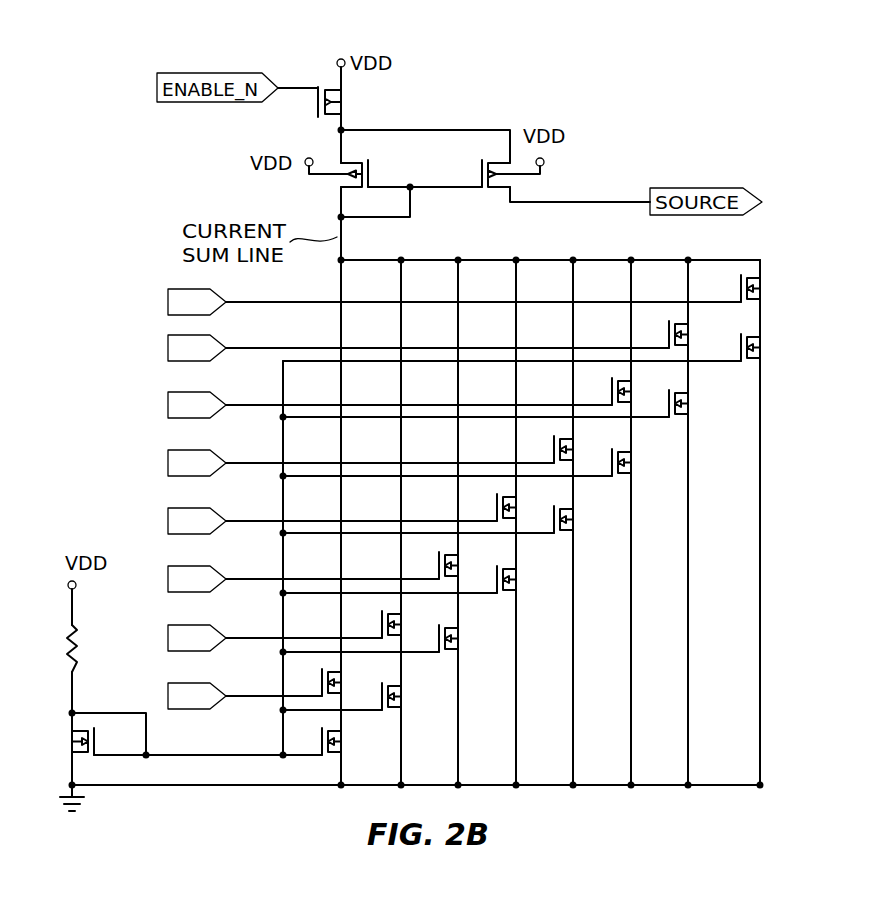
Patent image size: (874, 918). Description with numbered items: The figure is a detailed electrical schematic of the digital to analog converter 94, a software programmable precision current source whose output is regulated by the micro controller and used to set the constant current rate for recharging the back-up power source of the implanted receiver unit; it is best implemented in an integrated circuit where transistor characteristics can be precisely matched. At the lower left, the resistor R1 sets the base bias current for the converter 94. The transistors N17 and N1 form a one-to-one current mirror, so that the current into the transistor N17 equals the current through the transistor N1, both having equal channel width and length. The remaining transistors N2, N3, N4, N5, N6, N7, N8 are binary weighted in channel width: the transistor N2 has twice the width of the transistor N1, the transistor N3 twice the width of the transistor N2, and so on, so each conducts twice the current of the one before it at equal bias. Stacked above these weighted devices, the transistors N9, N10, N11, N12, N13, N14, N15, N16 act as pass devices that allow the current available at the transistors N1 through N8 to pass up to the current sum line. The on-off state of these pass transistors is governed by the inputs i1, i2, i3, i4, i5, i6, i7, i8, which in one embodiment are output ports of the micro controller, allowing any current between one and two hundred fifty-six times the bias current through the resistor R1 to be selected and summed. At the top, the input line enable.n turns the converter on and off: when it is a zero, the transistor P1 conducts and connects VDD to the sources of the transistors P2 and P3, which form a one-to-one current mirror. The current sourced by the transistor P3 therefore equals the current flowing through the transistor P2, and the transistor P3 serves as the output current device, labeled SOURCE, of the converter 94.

The digital to analog converter 94 is at (763, 528).
The transistor P1 is at (311, 103).
The transistor P2 is at (368, 173).
The transistor P3 is at (480, 173).
The transistor N1 is at (356, 752).
The transistor N2 is at (416, 707).
The transistor N3 is at (473, 649).
The transistor N4 is at (531, 590).
The transistor N5 is at (594, 530).
The transistor N6 is at (652, 473).
The transistor N7 is at (709, 414).
The transistor N8 is at (794, 352).
The transistor N9 is at (315, 682).
The transistor N10 is at (374, 615).
The transistor N11 is at (431, 556).
The transistor N12 is at (489, 498).
The transistor N13 is at (546, 440).
The transistor N14 is at (604, 382).
The transistor N15 is at (661, 325).
The transistor N16 is at (725, 288).
The transistor N17 is at (104, 740).
The resistor R1 is at (88, 648).
The input i1 is at (197, 696).
The input i2 is at (197, 638).
The input i3 is at (197, 579).
The input i4 is at (197, 521).
The input i5 is at (197, 463).
The input i6 is at (197, 405).
The input i7 is at (197, 348).
The input i8 is at (197, 302).